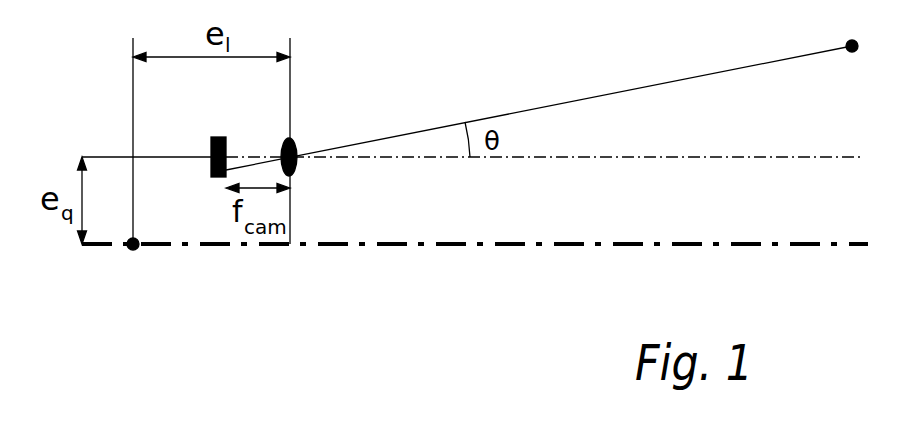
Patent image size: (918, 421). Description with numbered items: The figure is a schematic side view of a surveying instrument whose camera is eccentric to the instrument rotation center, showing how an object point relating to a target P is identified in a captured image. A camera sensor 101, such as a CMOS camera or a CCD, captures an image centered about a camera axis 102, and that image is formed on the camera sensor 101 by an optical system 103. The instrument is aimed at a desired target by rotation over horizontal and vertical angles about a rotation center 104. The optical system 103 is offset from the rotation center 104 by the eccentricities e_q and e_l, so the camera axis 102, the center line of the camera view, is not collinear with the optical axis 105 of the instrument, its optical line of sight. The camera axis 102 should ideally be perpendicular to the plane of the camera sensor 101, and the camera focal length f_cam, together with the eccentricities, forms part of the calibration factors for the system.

The camera sensor 101 is at (213, 137).
The camera axis 102 is at (437, 158).
The optical system 103 is at (292, 137).
The rotation center 104 is at (139, 248).
The optical axis 105 is at (370, 247).
The target P is at (852, 52).